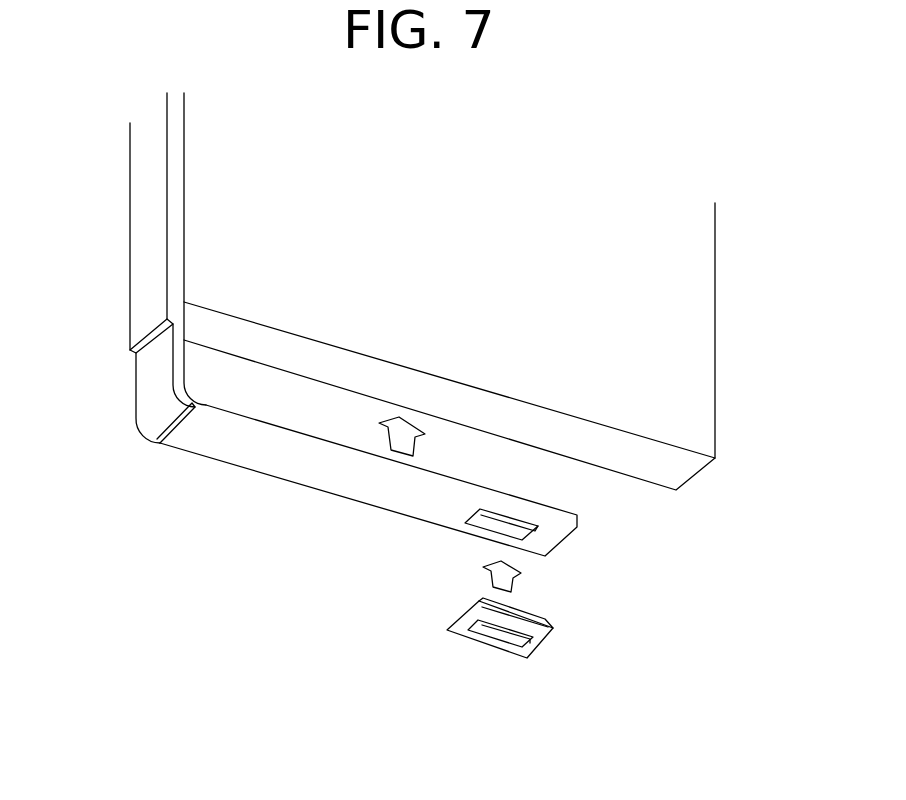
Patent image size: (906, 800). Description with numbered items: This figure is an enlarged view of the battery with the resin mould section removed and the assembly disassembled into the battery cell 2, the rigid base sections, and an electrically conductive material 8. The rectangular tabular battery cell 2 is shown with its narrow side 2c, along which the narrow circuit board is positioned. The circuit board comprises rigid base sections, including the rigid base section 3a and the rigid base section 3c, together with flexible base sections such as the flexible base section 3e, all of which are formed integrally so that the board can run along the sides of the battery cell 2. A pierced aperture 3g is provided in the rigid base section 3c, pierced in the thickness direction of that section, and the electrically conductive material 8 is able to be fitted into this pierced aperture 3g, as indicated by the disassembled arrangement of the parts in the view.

The battery cell 2 is at (698, 338).
The narrow side of the battery cell 2c is at (657, 473).
The rigid base section 3a is at (138, 232).
The rigid base section 3c is at (320, 485).
The flexible base section 3e is at (140, 397).
The pierced aperture 3g is at (518, 536).
The electrically conductive material 8 is at (545, 643).